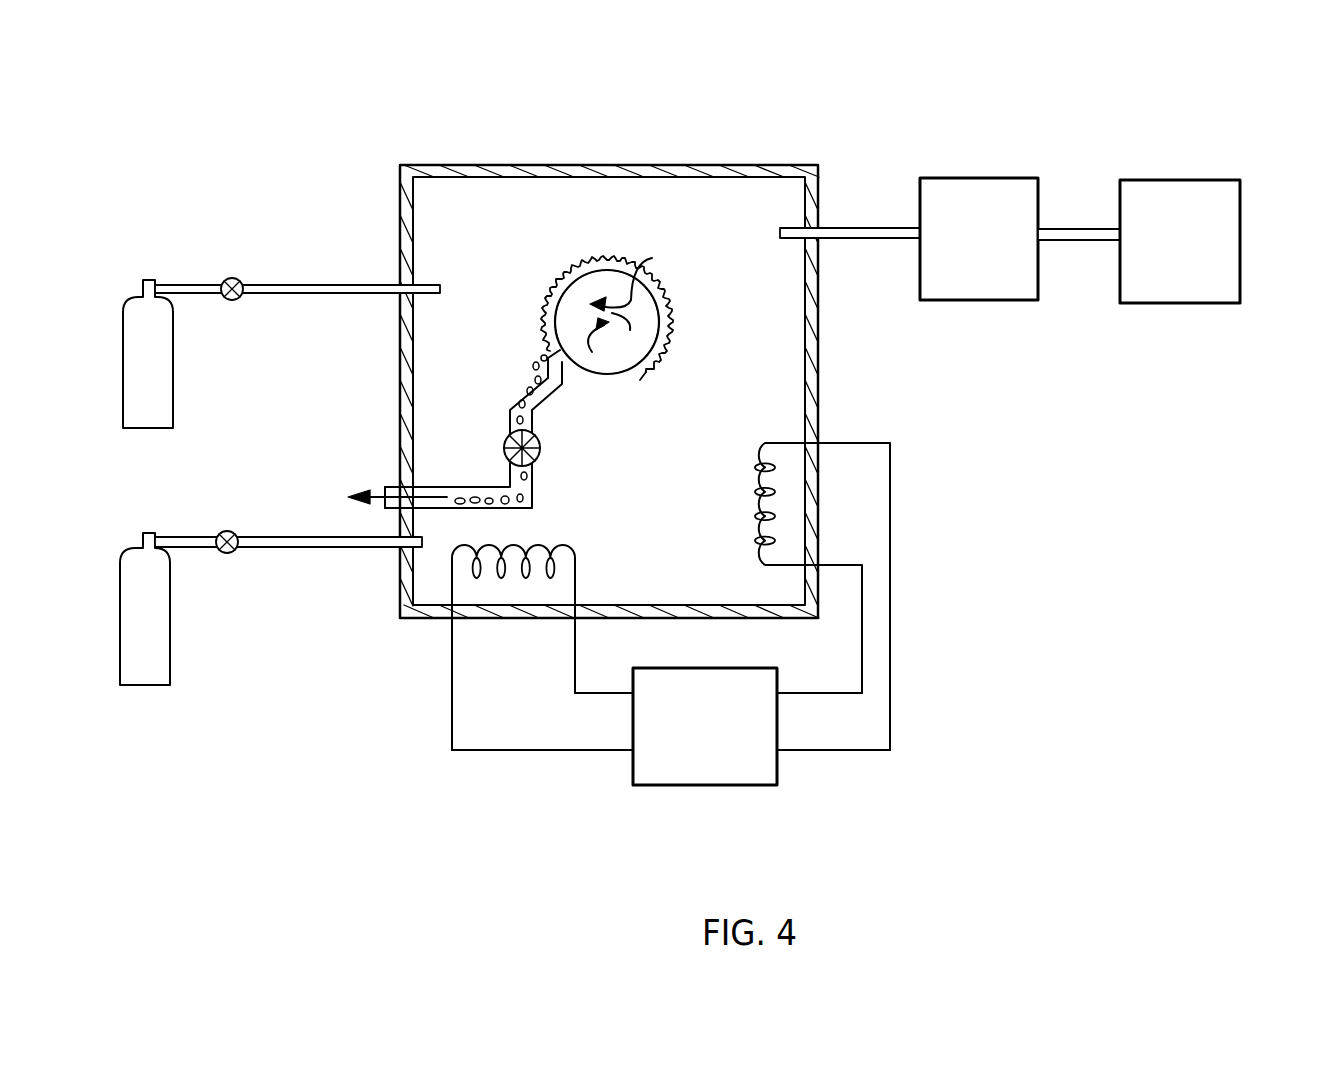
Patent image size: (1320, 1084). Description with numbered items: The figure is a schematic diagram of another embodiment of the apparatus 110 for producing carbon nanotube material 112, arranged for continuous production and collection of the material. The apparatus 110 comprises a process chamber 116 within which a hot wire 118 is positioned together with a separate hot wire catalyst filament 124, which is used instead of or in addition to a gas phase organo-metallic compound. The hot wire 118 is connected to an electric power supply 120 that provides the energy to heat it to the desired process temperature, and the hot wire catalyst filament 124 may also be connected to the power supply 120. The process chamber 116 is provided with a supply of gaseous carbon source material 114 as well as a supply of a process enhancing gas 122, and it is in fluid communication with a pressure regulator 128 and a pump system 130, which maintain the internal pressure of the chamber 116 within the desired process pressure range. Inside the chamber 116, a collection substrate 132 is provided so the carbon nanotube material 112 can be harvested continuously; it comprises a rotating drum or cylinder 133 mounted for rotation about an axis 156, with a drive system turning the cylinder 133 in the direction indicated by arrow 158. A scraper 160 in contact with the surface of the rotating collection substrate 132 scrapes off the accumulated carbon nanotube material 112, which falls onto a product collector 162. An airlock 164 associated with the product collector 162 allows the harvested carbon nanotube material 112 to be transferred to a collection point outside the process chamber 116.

The apparatus 110 is at (305, 132).
The carbon nanotube material 112 is at (548, 295).
The gaseous carbon source material 114 is at (165, 635).
The process chamber 116 is at (703, 165).
The hot wire 118 is at (537, 545).
The electric power supply 120 is at (683, 787).
The process enhancing gas 122 is at (170, 380).
The hot wire catalyst filament 124 is at (748, 487).
The pressure regulator 128 is at (945, 178).
The pump system 130 is at (1165, 180).
The collection substrate 132 is at (624, 378).
The rotating drum or cylinder 133 is at (668, 315).
The axis 156 is at (616, 346).
The arrow 158 is at (647, 283).
The scraper 160 is at (577, 365).
The product collector 162 is at (510, 410).
The airlock 164 is at (542, 449).